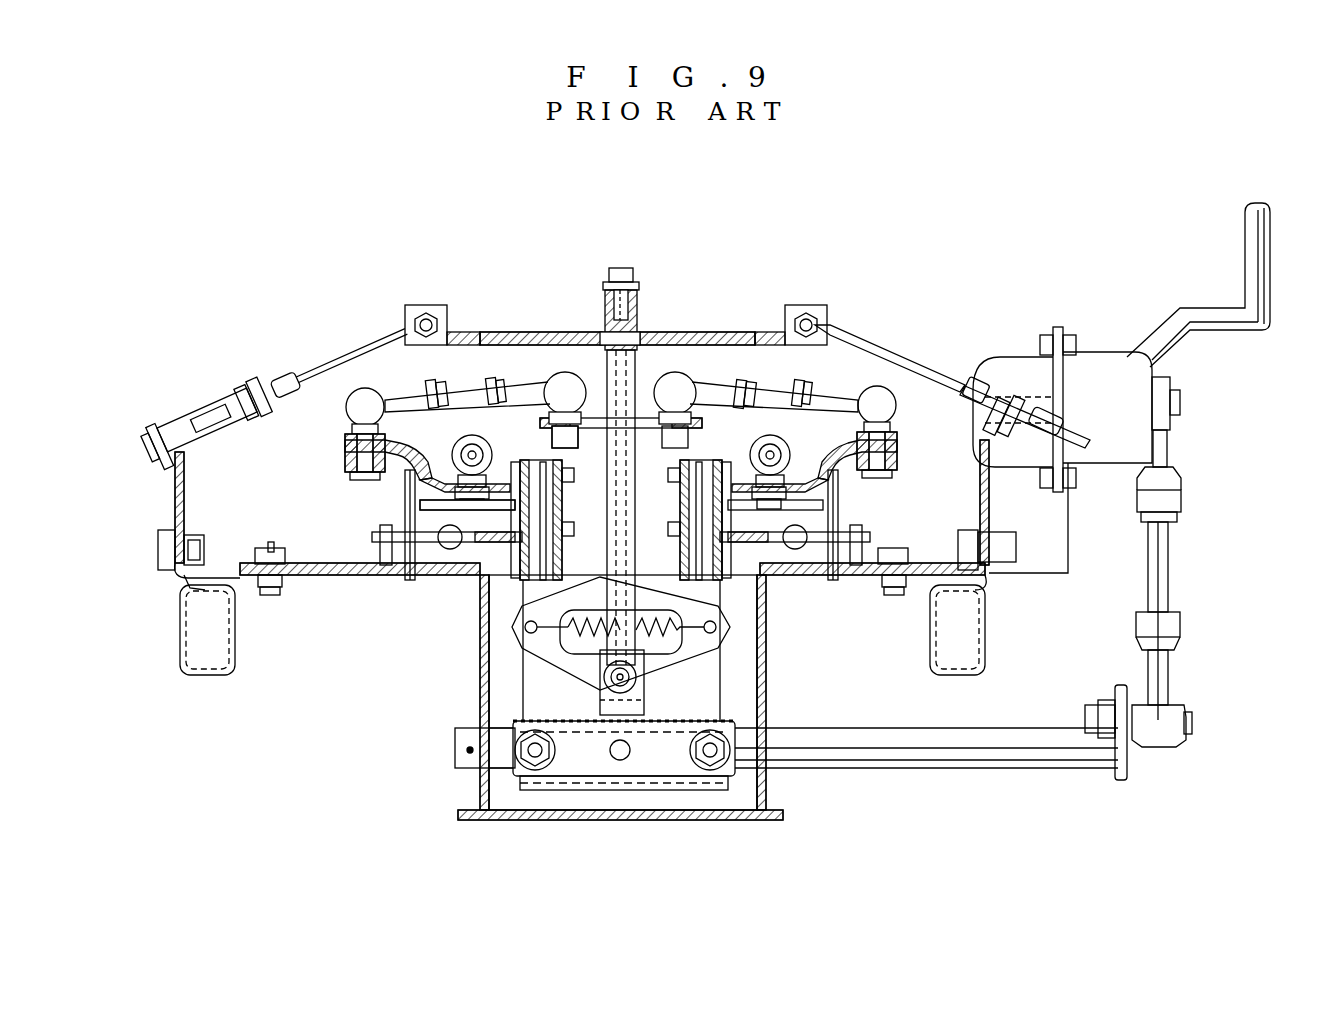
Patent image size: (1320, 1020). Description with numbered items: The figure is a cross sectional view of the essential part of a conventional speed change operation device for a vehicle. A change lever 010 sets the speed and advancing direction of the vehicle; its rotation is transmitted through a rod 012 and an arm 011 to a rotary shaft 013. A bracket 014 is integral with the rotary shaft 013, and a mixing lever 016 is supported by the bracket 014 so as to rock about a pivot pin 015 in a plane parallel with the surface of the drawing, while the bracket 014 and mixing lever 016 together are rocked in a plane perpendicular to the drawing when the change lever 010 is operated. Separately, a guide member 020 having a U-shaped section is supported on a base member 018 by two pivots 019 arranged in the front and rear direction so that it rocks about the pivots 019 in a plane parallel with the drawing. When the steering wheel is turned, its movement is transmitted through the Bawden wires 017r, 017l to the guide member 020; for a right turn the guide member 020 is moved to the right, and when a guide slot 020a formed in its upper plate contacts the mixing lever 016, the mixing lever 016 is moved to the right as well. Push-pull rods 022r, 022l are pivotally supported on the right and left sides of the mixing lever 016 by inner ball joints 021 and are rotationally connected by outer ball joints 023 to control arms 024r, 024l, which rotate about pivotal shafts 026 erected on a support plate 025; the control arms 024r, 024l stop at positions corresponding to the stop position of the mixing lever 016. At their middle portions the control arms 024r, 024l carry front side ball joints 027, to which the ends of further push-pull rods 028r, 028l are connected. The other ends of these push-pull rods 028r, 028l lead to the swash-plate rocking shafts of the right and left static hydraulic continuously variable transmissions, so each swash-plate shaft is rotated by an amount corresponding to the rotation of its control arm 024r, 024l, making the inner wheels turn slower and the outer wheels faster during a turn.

The change lever 010 is at (1240, 238).
The arm 011 is at (1117, 690).
The rod 012 is at (1170, 550).
The rotary shaft 013 is at (965, 770).
The bracket 014 is at (668, 770).
The pivot pin 015 is at (610, 690).
The mixing lever 016 is at (645, 303).
The Bawden wire 017l is at (318, 370).
The Bawden wire 017r is at (940, 385).
The base member 018 is at (768, 678).
The pivots 019 is at (618, 762).
The guide member 020 is at (480, 678).
The guide slot 020a is at (545, 332).
The inner ball joints 021 is at (558, 372).
The push-pull rod 022l is at (480, 388).
The push-pull rod 022r is at (774, 382).
The outer ball joints 023 is at (362, 388).
The control arm 024l is at (345, 448).
The control arm 024r is at (897, 446).
The support plate 025 is at (346, 577).
The pivotal shafts 026 is at (525, 585).
The front side ball joints 027 is at (468, 445).
The push-pull rod 028l is at (405, 495).
The push-pull rod 028r is at (790, 458).